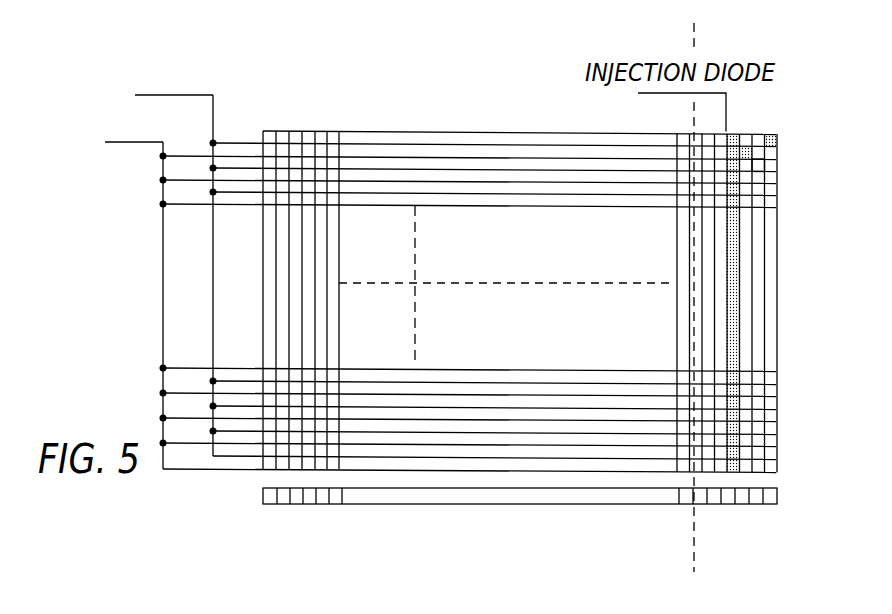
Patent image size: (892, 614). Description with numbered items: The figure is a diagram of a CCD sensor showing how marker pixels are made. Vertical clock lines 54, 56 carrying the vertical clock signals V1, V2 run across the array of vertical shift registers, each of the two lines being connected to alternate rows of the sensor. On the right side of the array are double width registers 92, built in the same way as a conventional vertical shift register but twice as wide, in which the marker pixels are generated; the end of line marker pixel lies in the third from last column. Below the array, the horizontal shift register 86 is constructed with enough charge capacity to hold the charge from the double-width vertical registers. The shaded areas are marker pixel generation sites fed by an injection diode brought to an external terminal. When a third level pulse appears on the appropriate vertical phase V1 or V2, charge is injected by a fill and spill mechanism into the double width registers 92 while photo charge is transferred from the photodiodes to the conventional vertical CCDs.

The vertical clock signal V1 line 54 is at (213, 95).
The vertical clock signal V2 line 56 is at (163, 148).
The horizontal shift register 86 is at (320, 505).
The double width registers 92 is at (768, 316).
The vertical clock signal V1 is at (790, 140).
The vertical clock signal V2 is at (774, 167).